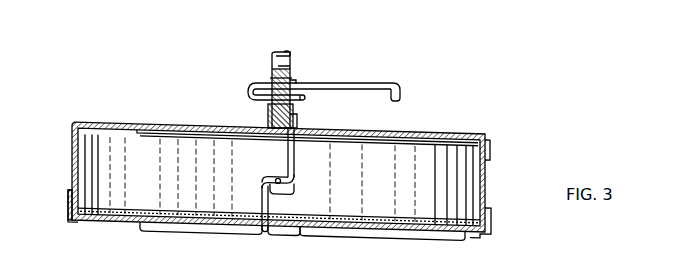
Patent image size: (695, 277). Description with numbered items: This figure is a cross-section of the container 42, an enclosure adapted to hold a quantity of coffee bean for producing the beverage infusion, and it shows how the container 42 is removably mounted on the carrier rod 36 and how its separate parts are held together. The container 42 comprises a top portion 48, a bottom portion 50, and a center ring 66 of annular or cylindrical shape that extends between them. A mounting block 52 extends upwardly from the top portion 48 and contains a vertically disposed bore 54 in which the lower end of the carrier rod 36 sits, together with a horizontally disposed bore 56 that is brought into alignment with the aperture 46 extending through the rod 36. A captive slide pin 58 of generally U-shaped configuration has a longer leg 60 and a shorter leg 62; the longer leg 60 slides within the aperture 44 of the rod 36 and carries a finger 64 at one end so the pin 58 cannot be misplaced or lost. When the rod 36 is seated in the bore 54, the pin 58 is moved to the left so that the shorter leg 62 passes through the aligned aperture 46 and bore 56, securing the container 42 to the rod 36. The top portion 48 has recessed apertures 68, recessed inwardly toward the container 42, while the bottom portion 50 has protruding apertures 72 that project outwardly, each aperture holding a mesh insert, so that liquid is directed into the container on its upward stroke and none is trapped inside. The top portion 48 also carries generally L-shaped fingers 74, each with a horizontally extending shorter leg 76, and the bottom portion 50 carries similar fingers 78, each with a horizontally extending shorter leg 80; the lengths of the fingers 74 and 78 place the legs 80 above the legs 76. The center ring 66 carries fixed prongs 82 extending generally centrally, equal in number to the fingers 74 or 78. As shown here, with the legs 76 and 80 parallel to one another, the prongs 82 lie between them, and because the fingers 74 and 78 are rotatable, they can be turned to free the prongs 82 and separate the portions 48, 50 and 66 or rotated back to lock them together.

The carrier rod 36 is at (287, 63).
The container 42 is at (490, 183).
The aperture 44 is at (294, 83).
The aperture 46 is at (297, 118).
The top portion 48 is at (490, 141).
The bottom portion 50 is at (491, 221).
The mounting block 52 is at (268, 116).
The vertically disposed bore 54 is at (307, 97).
The horizontally disposed bore 56 is at (262, 74).
The captive slide pin 58 is at (341, 83).
The longer leg 60 is at (254, 82).
The shorter leg 62 is at (251, 100).
The finger 64 is at (403, 96).
The center ring 66 is at (70, 160).
The recessed apertures 68 is at (180, 141).
The protruding apertures 72 is at (148, 230).
The fingers 74 is at (296, 161).
The shorter leg 76 is at (282, 192).
The fingers 78 is at (262, 200).
The shorter leg 80 is at (284, 168).
The prongs 82 is at (284, 182).